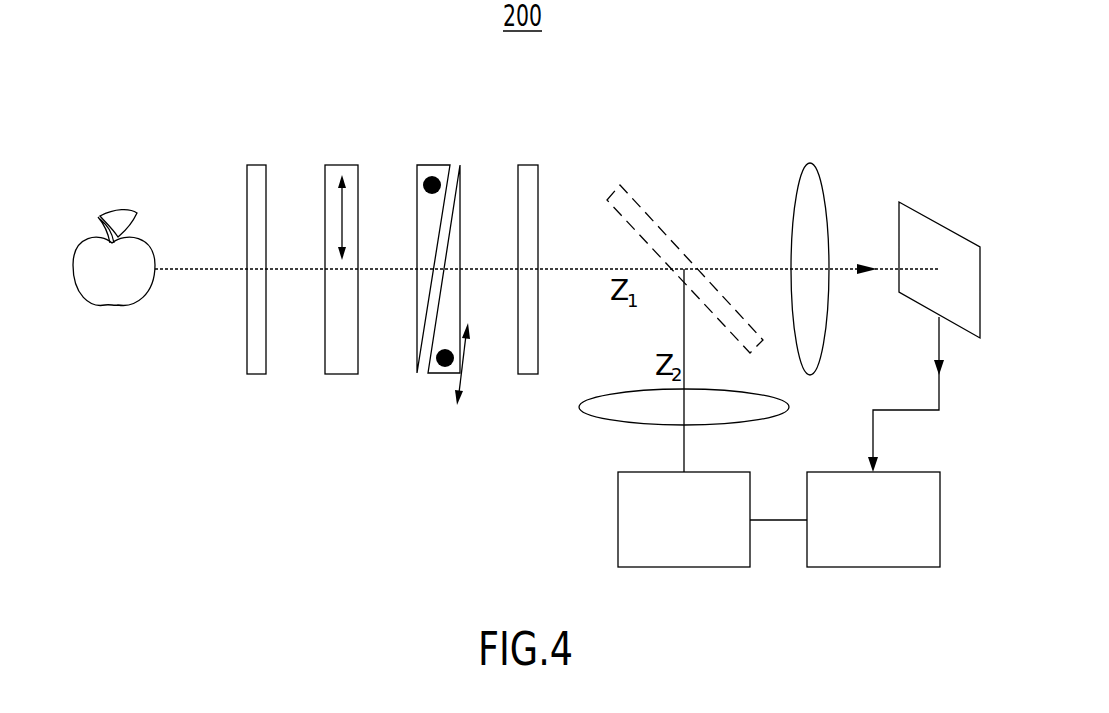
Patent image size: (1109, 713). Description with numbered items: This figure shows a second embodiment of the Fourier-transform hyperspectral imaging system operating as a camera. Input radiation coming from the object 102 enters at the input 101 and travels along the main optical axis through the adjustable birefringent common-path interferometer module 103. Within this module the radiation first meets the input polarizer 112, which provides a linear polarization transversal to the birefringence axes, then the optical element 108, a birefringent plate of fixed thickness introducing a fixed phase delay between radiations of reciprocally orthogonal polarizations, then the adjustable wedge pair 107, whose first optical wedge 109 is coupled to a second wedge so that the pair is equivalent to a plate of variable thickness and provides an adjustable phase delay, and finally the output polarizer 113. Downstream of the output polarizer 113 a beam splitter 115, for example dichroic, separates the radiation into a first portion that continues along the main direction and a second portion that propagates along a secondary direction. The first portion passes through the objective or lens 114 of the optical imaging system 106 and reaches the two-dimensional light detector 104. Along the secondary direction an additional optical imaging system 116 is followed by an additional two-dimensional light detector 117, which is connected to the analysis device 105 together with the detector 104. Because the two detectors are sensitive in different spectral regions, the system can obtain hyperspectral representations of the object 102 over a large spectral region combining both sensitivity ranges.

The input 101 is at (224, 244).
The object 102 is at (132, 307).
The adjustable birefringent common-path interferometer module 103 is at (264, 471).
The two-dimensional light detector 104 is at (912, 203).
The analysis device 105 is at (882, 568).
The optical imaging system 106 is at (870, 117).
The adjustable wedge pair 107 is at (462, 205).
The optical element 108 is at (339, 162).
The first optical wedge 109 is at (433, 163).
The input polarizer 112 is at (260, 160).
The output polarizer 113 is at (538, 300).
The objective or lens 114 is at (795, 193).
The beam splitter 115 is at (643, 200).
The additional optical imaging system 116 is at (598, 420).
The additional two-dimensional light detector 117 is at (617, 517).